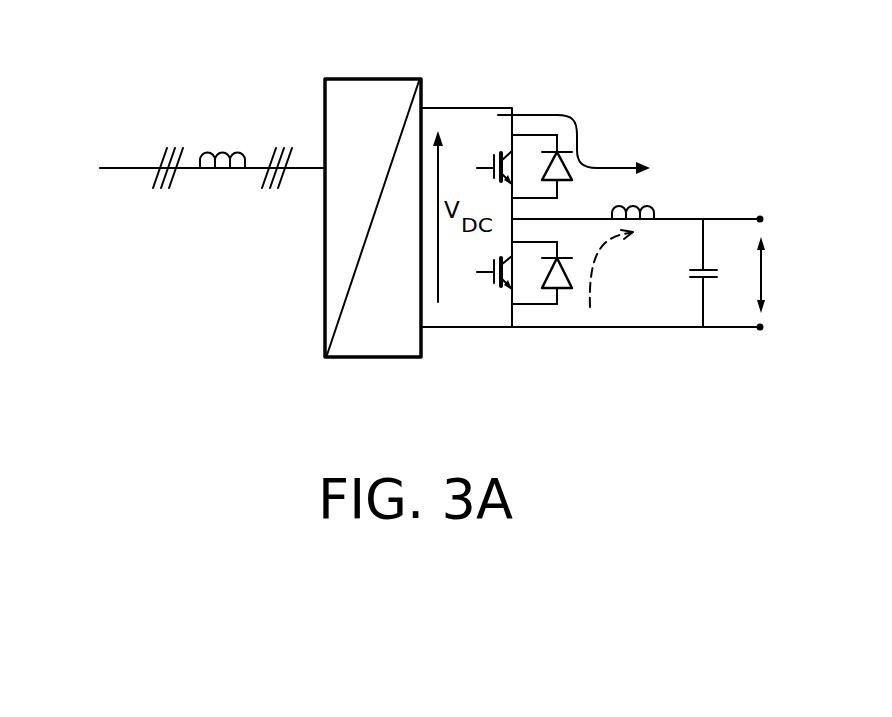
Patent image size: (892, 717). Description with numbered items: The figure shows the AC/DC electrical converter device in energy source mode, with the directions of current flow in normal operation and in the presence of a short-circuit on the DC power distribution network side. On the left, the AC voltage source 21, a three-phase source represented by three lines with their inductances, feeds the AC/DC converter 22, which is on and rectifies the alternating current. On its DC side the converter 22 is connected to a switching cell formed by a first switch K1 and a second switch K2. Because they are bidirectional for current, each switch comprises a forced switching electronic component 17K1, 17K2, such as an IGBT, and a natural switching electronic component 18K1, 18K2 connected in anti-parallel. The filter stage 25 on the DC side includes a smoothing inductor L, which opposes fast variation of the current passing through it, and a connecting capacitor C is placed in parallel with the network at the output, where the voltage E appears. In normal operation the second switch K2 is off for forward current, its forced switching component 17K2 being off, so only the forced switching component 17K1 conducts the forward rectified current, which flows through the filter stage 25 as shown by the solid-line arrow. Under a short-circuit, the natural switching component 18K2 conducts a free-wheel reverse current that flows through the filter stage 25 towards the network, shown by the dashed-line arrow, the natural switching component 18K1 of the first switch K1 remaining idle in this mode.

The AC voltage source 21 is at (165, 206).
The AC/DC converter 22 is at (352, 95).
The filter stage 25 is at (670, 203).
The first switch K1 is at (492, 146).
The second switch K2 is at (495, 291).
The forced switching electronic component 17K1 is at (513, 167).
The forced switching electronic component 17K2 is at (514, 273).
The natural switching electronic component 18K1 is at (566, 162).
The natural switching electronic component 18K2 is at (567, 276).
The smoothing inductor L is at (633, 197).
The connecting capacitor C is at (714, 273).
The voltage at the terminals of the electrical converter device on the DC side E is at (769, 275).